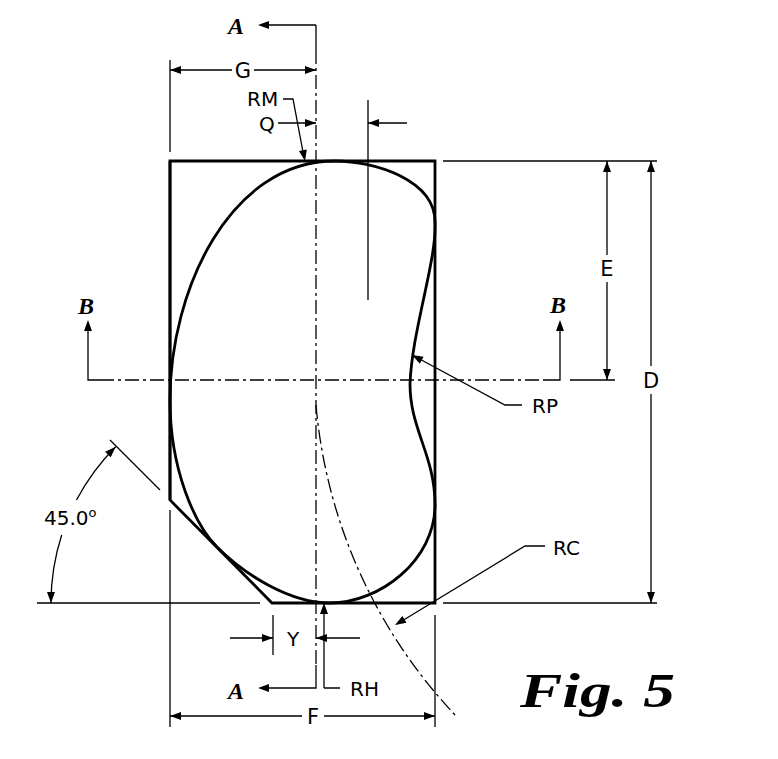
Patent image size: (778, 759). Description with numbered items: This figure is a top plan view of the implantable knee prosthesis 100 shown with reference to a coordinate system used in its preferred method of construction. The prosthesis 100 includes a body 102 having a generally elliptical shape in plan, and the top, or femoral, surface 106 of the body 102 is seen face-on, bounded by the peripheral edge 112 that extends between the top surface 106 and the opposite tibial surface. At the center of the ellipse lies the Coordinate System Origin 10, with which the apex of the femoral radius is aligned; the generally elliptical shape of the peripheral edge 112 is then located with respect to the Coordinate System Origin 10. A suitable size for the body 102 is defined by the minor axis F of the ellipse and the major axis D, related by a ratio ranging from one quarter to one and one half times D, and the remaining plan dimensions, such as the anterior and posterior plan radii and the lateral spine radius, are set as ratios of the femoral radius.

The implantable knee prosthesis 100 is at (438, 76).
The body 102 is at (217, 217).
The top surface 106 is at (213, 288).
The peripheral edge 112 is at (167, 395).
The Coordinate System Origin 10 is at (316, 380).